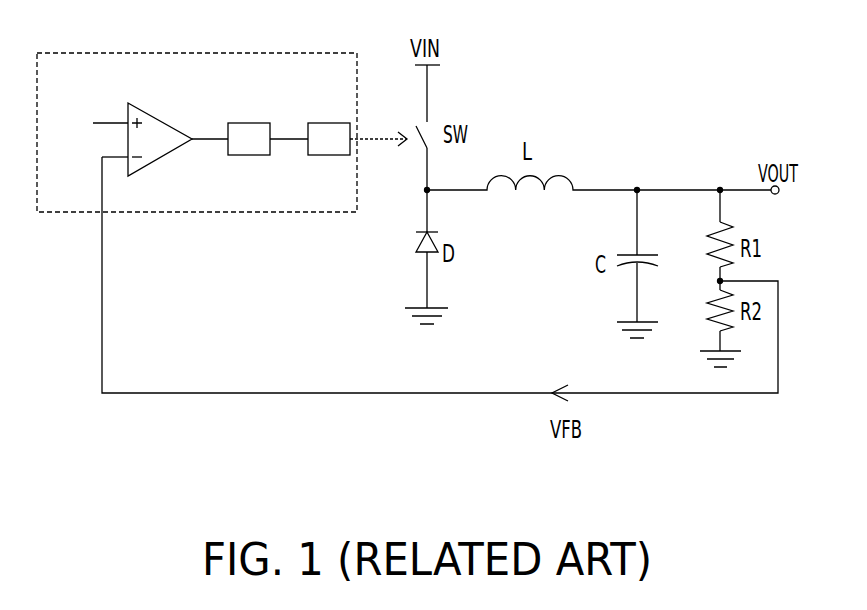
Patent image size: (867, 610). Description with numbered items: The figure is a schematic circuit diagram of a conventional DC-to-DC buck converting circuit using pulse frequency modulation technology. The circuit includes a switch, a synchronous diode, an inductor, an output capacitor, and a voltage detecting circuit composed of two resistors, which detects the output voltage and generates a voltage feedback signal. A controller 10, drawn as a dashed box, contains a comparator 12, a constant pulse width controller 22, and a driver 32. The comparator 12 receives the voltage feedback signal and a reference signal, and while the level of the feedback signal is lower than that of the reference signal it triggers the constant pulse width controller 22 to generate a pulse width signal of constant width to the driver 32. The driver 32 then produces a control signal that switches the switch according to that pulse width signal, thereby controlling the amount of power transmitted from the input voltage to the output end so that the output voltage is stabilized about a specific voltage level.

The controller 10 is at (92, 61).
The comparator 12 is at (155, 127).
The constant pulse width controller 22 is at (262, 151).
The driver 32 is at (342, 151).